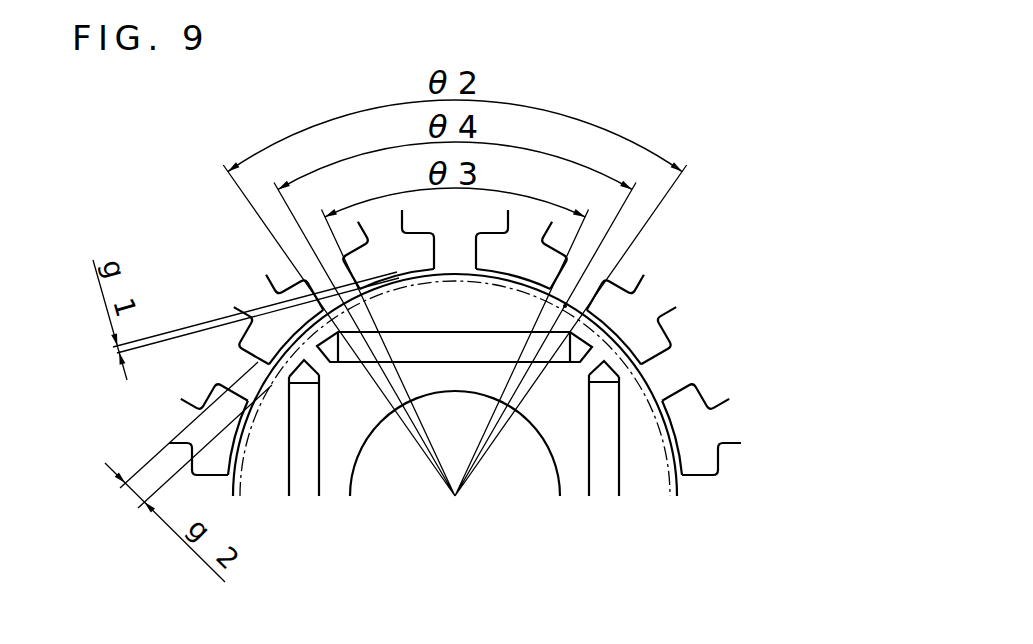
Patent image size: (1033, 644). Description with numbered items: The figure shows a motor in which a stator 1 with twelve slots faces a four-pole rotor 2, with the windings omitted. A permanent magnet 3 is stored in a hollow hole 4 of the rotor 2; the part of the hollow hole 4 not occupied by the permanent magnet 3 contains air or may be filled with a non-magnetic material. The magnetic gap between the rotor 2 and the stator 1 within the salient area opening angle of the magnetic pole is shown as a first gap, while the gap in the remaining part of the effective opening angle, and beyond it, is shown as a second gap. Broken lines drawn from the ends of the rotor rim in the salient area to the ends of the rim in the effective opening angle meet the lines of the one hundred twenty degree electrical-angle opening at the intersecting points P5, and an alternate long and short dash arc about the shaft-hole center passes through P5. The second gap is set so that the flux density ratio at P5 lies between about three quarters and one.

The stator 1 is at (647, 302).
The rotor 2 is at (643, 462).
The permanent magnet 3 is at (602, 400).
The hollow hole 4 is at (620, 360).
The intersecting point P5 is at (565, 306).